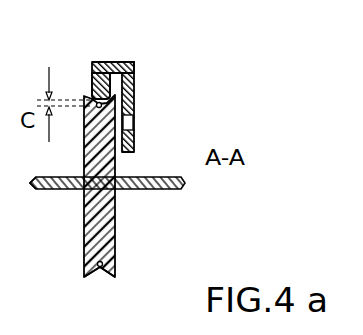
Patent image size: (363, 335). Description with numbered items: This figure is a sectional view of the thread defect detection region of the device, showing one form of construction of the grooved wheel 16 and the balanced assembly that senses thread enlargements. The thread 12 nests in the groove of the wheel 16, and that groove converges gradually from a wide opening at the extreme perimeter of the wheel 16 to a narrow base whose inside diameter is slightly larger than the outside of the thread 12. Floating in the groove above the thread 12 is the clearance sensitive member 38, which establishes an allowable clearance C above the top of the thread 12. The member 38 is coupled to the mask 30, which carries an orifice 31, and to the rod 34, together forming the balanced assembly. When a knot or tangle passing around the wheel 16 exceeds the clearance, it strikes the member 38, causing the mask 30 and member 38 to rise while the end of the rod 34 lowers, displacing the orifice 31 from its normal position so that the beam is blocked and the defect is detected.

The thread 12 is at (100, 278).
The wheel 16 is at (117, 218).
The mask 30 is at (142, 92).
The orifice 31 is at (142, 125).
The rod 34 is at (142, 55).
The clearance sensitive member 38 is at (92, 86).